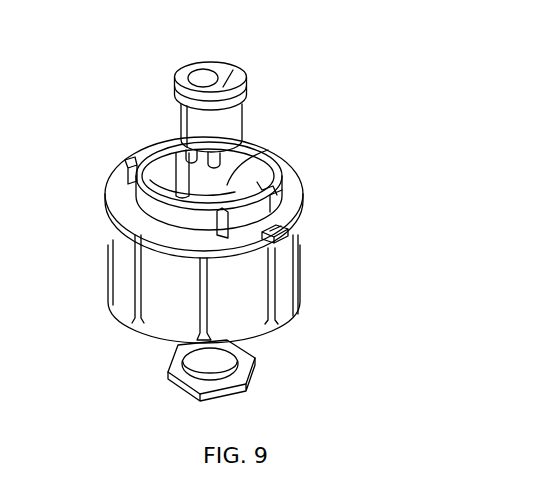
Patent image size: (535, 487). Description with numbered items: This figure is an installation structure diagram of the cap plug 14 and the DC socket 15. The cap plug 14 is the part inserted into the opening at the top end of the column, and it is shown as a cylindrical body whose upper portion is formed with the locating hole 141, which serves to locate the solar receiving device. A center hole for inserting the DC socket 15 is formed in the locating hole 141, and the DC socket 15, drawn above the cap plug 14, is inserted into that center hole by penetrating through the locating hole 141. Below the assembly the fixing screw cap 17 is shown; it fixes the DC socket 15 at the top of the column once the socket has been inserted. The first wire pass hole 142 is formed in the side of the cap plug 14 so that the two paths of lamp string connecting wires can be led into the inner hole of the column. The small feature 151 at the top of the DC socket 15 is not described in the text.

The cap plug 14 is at (152, 291).
The locating hole 141 is at (262, 158).
The first wire pass hole 142 is at (303, 212).
The DC socket 15 is at (213, 99).
The cap top boss 151 is at (204, 81).
The fixing screw cap 17 is at (256, 366).